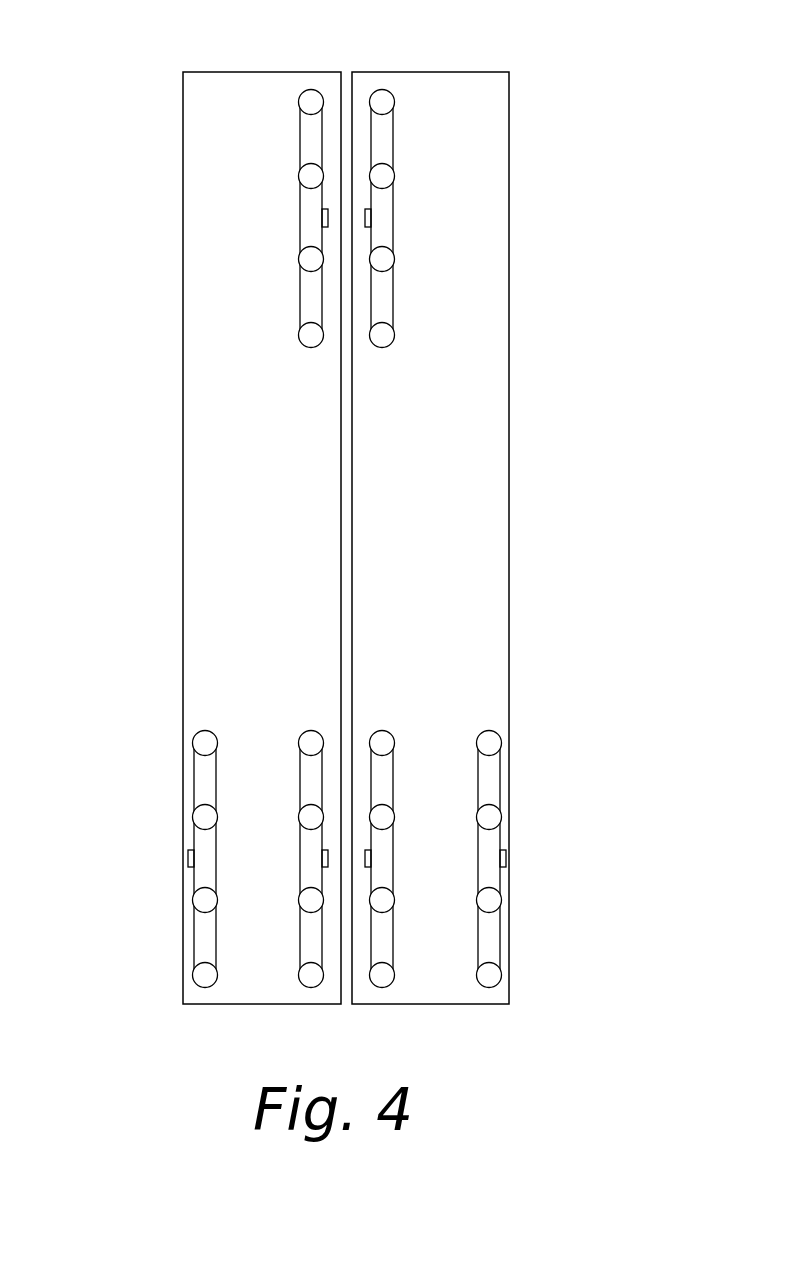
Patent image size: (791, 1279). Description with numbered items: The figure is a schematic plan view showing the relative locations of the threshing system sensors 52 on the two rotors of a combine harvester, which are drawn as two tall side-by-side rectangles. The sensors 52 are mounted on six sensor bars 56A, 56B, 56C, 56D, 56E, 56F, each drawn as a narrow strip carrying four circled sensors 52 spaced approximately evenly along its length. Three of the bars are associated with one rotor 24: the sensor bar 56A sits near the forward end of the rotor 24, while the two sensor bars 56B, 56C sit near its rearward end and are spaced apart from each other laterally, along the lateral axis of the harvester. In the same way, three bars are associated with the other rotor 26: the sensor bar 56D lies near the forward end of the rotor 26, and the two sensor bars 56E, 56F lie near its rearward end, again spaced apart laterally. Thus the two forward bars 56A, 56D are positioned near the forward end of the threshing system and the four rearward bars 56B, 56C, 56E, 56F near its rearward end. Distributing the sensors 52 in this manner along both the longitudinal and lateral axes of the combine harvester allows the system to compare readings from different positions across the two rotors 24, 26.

The rotor 24 is at (484, 447).
The rotor 26 is at (200, 412).
The sensor 52 is at (298, 176).
The sensor bar 56A is at (305, 213).
The sensor bar 56B is at (307, 789).
The sensor bar 56C is at (197, 857).
The sensor bar 56D is at (388, 228).
The sensor bar 56E is at (385, 780).
The sensor bar 56F is at (493, 855).